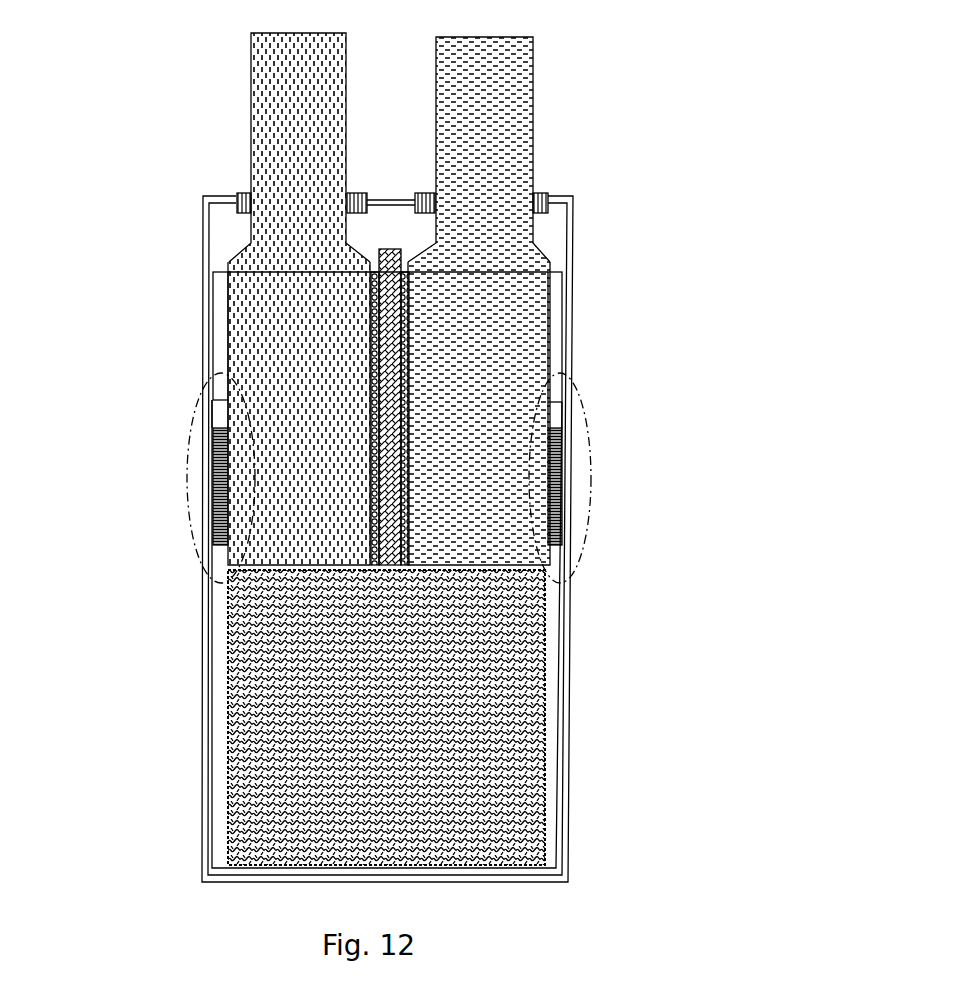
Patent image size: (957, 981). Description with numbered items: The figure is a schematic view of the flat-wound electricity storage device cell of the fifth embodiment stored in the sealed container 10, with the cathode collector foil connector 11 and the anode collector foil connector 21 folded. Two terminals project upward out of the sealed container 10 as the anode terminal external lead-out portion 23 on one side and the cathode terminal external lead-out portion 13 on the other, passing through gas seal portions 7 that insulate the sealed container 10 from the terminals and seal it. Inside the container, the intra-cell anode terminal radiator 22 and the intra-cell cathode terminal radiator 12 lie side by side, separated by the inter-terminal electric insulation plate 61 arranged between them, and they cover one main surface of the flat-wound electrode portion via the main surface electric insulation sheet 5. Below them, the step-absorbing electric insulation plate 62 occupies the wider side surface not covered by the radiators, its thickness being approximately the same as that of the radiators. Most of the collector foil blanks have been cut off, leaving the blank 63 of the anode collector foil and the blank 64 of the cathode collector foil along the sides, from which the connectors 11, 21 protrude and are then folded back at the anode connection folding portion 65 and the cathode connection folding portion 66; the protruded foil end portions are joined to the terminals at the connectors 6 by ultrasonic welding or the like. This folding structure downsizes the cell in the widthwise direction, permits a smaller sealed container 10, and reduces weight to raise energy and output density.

The main surface electric insulation sheet 5 is at (560, 765).
The connectors 6 is at (212, 497).
The gas seal portions 7 is at (238, 192).
The sealed container 10 is at (387, 200).
The cathode collector foil connector 11 is at (556, 412).
The intra-cell cathode terminal radiator 12 is at (458, 500).
The cathode terminal external lead-out portion 13 is at (532, 107).
The anode collector foil connector 21 is at (220, 413).
The intra-cell anode terminal radiator 22 is at (298, 498).
The anode terminal external lead-out portion 23 is at (250, 115).
The inter-terminal electric insulation plate 61 is at (375, 357).
The step-absorbing electric insulation plate 62 is at (308, 740).
The blank of the anode collector foil 63 is at (222, 310).
The blank of the cathode collector foil 64 is at (560, 348).
The anode connection folding portion 65 is at (187, 450).
The cathode connection folding portion 66 is at (588, 453).